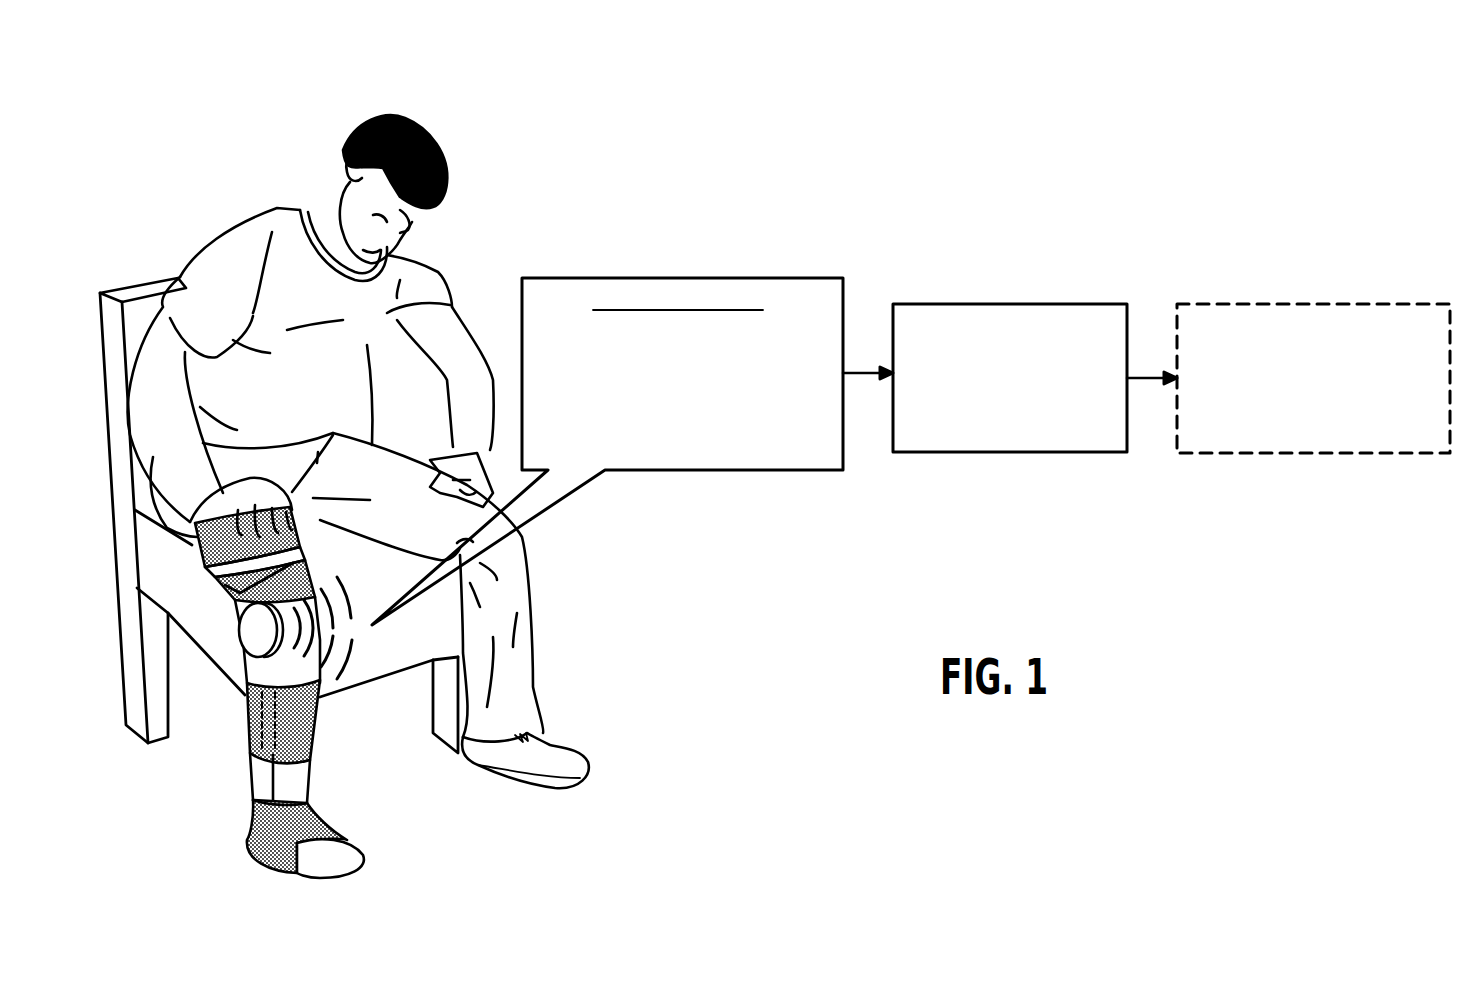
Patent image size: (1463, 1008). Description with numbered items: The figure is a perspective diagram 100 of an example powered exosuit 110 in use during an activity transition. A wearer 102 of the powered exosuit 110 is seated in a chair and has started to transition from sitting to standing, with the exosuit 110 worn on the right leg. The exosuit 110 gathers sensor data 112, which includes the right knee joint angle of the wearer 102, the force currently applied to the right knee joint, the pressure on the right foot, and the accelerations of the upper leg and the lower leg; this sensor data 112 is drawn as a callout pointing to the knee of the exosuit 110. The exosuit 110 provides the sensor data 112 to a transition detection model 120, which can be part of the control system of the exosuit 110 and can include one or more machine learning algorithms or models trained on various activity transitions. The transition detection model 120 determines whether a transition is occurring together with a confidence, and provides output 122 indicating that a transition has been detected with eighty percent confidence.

The perspective diagram 100 is at (222, 136).
The wearer 102 is at (194, 249).
The powered exosuit 110 is at (222, 763).
The sensor data 112 is at (831, 306).
The transition detection model 120 is at (1119, 441).
The output 122 is at (1438, 444).